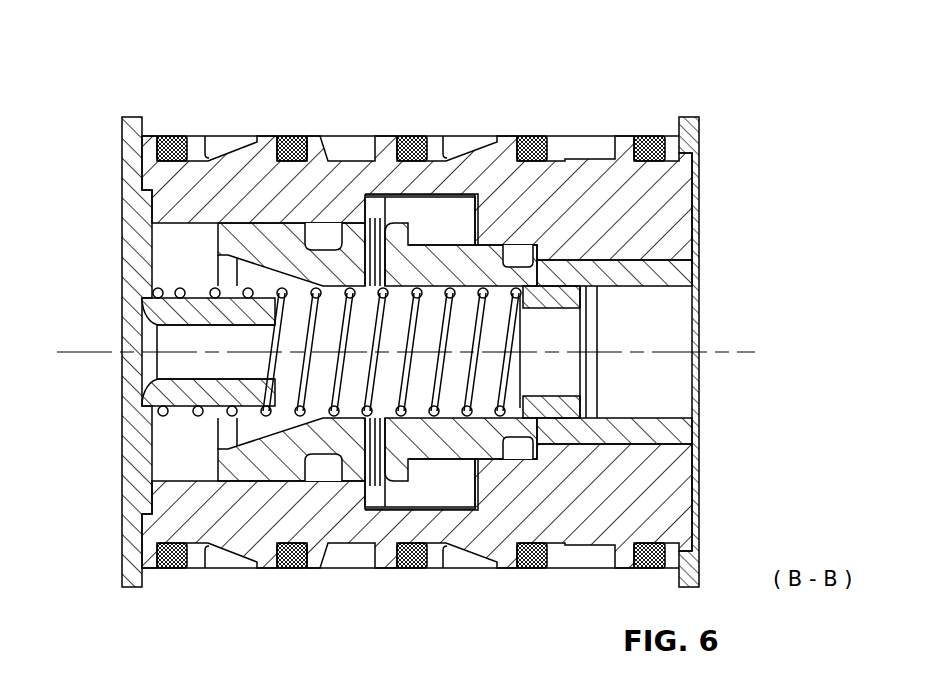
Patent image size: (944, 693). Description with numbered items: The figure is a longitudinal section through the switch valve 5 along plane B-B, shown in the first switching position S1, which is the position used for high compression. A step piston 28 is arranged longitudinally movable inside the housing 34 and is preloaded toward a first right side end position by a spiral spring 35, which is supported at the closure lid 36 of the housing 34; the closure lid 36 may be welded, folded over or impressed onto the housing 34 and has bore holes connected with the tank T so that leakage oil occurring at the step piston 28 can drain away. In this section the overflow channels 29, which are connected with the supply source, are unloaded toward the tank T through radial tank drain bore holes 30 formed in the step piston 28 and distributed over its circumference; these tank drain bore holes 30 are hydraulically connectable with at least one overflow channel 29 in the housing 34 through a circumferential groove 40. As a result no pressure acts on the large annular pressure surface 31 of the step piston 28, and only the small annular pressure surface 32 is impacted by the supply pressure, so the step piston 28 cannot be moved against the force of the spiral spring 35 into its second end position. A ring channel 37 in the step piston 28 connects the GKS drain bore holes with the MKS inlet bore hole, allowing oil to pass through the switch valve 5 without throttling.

The switch valve 5 is at (780, 142).
The step piston 28 is at (212, 236).
The overflow channel 29 is at (443, 487).
The tank drain bore hole 30 is at (348, 218).
The large annular pressure surface 31 is at (410, 228).
The small annular pressure surface 32 is at (507, 255).
The housing 34 is at (703, 210).
The spiral spring 35 is at (121, 431).
The closure lid 36 is at (121, 273).
The ring channel 37 is at (324, 468).
The circumferential groove 40 is at (378, 225).
The first switching position S1 is at (788, 307).
The tank T is at (392, 352).